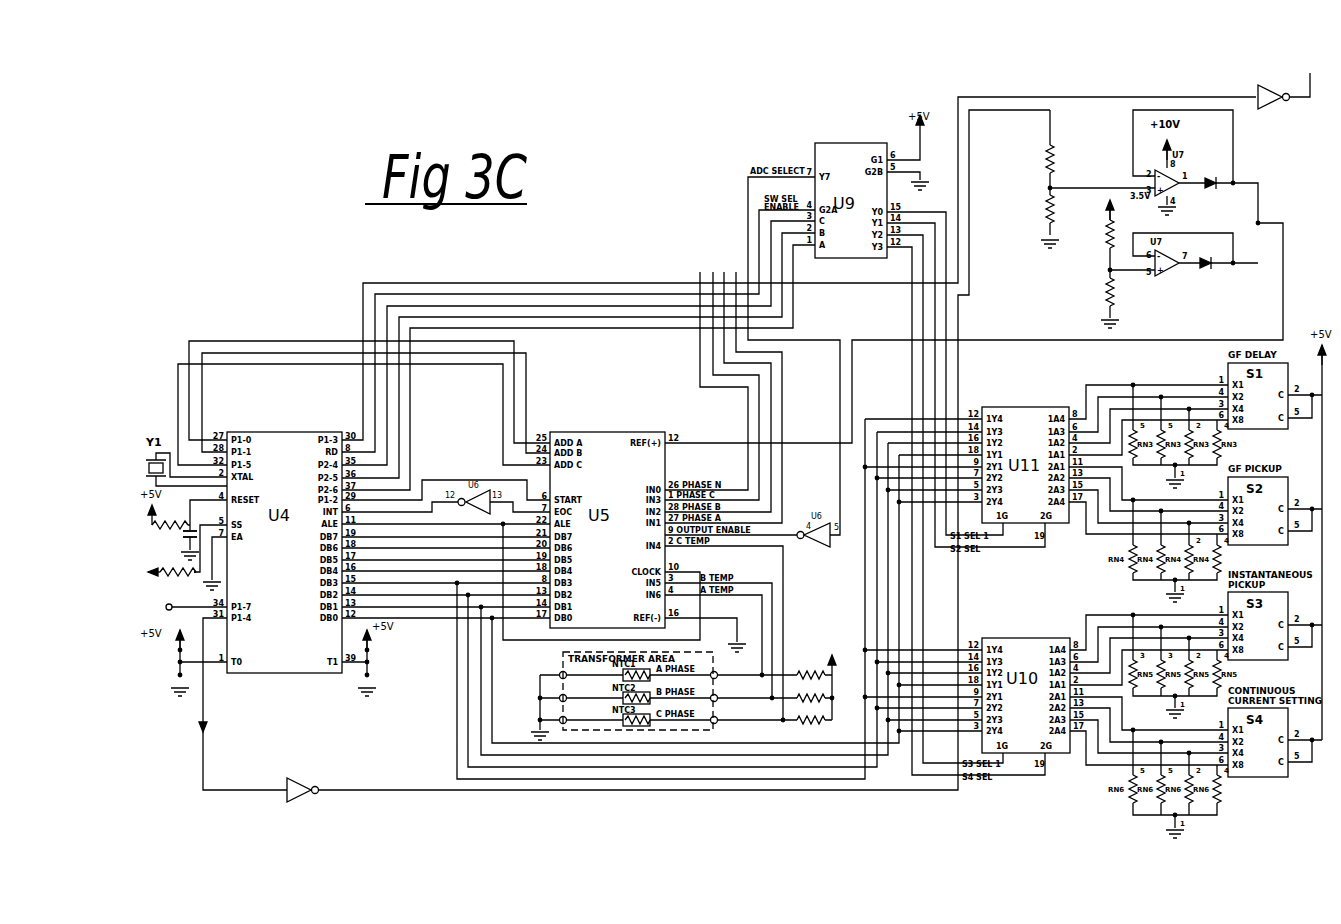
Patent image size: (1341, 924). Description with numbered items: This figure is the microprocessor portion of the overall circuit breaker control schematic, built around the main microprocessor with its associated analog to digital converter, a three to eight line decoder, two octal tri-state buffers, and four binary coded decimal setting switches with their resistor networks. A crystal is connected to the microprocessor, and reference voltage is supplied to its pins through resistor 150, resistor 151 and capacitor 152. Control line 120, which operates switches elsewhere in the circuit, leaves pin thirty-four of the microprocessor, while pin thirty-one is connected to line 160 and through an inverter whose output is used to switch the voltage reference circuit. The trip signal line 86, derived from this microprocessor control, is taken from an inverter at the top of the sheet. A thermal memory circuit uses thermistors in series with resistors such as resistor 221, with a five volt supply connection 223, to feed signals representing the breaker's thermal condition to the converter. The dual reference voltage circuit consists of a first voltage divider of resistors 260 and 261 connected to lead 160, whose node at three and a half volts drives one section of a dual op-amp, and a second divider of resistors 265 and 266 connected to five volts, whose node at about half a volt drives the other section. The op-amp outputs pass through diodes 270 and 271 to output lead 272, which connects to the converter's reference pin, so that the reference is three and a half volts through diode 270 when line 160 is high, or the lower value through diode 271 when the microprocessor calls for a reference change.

The trip signal line 86 is at (1310, 80).
The control line 120 is at (182, 612).
The resistor 150 is at (184, 533).
The resistor 151 is at (196, 578).
The capacitor 152 is at (188, 545).
The line 160 is at (207, 764).
The resistor 221 is at (798, 668).
The supply connection 223 is at (836, 698).
The resistor 260 is at (1046, 162).
The resistor 261 is at (1046, 220).
The resistor 265 is at (1102, 258).
The resistor 266 is at (1118, 292).
The diode 270 is at (1208, 190).
The diode 271 is at (1202, 270).
The output lead 272 is at (1283, 318).